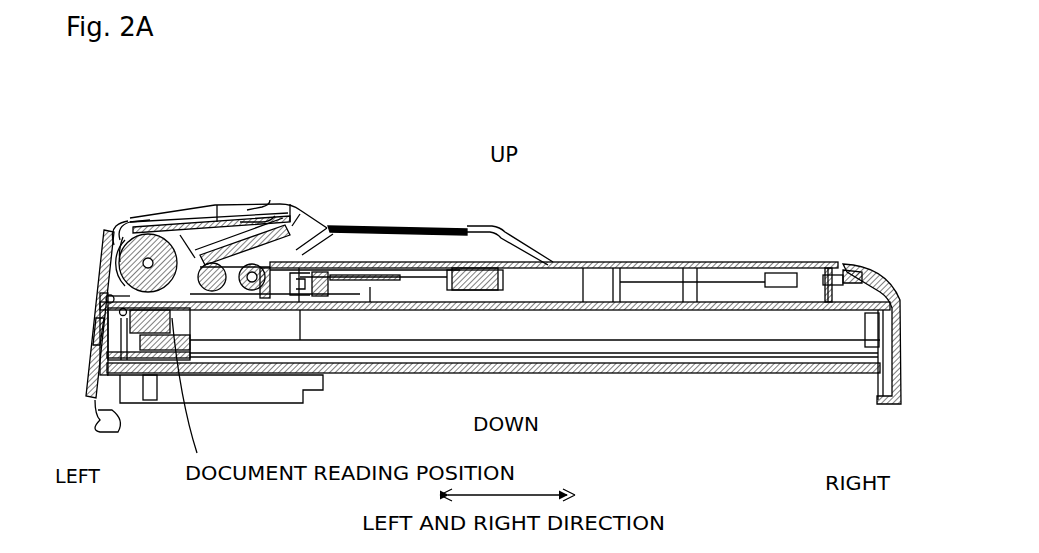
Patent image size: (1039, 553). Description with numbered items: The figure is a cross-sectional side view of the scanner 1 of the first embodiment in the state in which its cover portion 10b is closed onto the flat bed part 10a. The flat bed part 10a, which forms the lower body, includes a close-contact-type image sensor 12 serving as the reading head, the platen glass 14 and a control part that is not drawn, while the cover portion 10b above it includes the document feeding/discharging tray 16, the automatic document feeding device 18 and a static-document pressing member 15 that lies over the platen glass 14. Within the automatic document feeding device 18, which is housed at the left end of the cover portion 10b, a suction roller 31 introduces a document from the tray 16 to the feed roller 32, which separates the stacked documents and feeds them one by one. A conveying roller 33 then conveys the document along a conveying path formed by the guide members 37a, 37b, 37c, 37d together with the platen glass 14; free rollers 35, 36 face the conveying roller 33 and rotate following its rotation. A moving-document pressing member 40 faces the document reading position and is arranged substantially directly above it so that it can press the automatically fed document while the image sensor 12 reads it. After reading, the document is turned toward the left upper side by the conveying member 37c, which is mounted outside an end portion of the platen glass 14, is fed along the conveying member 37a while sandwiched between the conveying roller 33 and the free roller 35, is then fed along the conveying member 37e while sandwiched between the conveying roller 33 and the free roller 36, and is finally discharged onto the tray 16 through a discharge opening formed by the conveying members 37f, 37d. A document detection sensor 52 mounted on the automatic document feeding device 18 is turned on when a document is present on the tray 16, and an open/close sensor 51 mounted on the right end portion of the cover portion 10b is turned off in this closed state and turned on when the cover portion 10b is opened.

The scanner 1 is at (549, 158).
The flat bed part 10a is at (800, 377).
The cover portion 10b is at (751, 264).
The image sensor 12 is at (145, 376).
The platen glass 14 is at (643, 313).
The static-document pressing member 15 is at (647, 301).
The document feeding/discharging tray 16 is at (391, 226).
The automatic document feeding device 18 is at (206, 201).
The suction roller 31 is at (262, 293).
The feed roller 32 is at (227, 293).
The conveying roller 33 is at (117, 237).
The free roller 35 is at (107, 300).
The free roller 36 is at (151, 222).
The conveying member 37a is at (113, 238).
The guide member 37b is at (97, 282).
The conveying member 37c is at (97, 327).
The conveying member 37d is at (247, 210).
The conveying member 37e is at (137, 237).
The conveying member 37f is at (293, 232).
The moving-document pressing member 40 is at (174, 322).
The open/close sensor 51 is at (839, 266).
The document detection sensor 52 is at (230, 240).